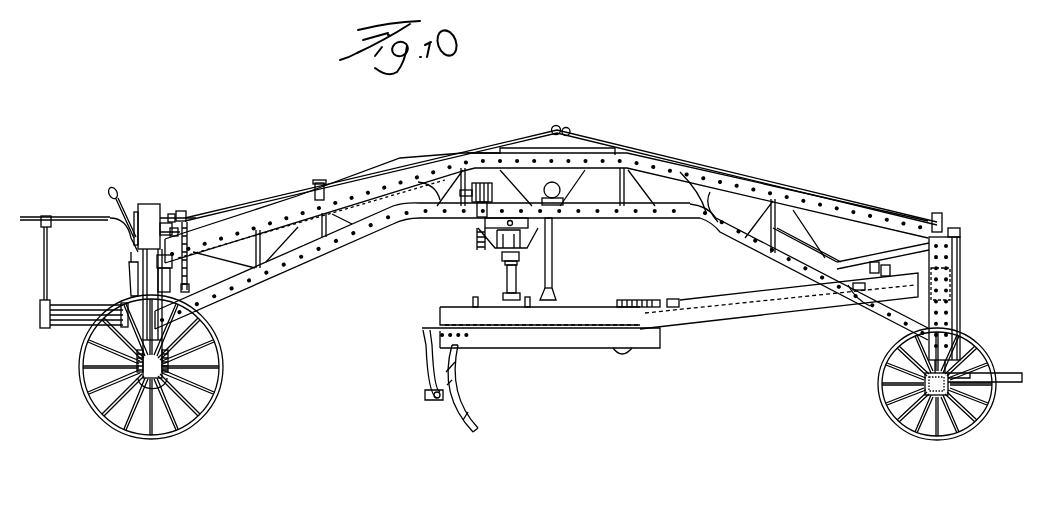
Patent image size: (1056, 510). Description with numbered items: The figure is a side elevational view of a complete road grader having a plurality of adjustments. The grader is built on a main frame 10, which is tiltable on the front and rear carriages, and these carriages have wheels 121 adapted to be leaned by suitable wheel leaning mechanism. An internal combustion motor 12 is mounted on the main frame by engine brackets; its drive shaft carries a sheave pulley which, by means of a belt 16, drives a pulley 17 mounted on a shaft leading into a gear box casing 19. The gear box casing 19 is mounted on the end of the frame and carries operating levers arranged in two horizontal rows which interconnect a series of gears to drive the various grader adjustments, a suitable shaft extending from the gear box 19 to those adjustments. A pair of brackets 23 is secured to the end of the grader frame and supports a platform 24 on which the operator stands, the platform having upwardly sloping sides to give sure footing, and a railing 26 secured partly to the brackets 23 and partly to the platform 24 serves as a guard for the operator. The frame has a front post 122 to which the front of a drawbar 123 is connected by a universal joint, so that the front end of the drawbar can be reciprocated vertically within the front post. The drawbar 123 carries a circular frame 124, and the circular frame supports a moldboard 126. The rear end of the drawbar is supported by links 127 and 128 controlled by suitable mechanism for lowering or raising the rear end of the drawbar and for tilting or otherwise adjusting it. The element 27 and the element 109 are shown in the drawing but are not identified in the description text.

The main frame 10 is at (743, 192).
The internal combustion motor 12 is at (235, 302).
The belt 16 is at (189, 276).
The pulley 17 is at (193, 215).
The gear box casing 19 is at (150, 205).
The brackets 23 is at (130, 282).
The platform 24 is at (68, 326).
The railing 26 is at (49, 236).
The bearing block 27 is at (166, 360).
The bracket 109 is at (306, 189).
The wheels 121 is at (218, 395).
The front post 122 is at (947, 305).
The drawbar 123 is at (770, 316).
The circular frame 124 is at (572, 346).
The moldboard 126 is at (470, 401).
The link 127 is at (505, 278).
The link 128 is at (552, 265).